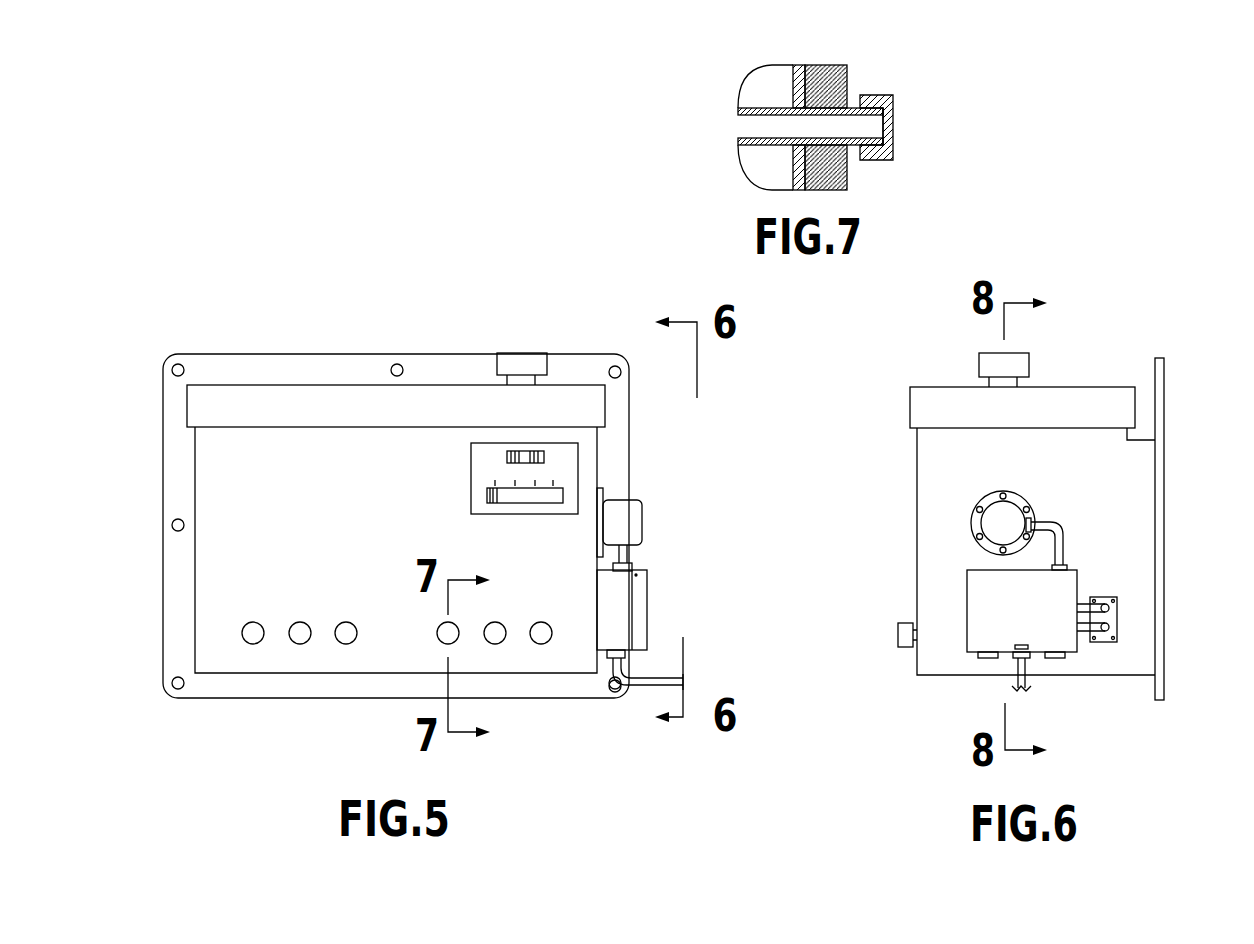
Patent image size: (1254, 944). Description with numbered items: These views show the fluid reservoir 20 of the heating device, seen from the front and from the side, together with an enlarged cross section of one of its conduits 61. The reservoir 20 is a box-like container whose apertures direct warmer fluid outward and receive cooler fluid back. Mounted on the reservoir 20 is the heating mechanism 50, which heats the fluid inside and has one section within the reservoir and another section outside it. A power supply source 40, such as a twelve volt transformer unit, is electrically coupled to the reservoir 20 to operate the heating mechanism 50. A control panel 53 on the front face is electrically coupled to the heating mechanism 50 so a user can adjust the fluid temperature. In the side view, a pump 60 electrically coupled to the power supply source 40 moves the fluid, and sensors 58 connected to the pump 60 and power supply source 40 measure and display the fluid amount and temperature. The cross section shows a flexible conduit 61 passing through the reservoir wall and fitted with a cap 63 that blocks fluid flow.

In FIG. 5, the reservoir 20 is at (240, 497).
In FIG. 6, the reservoir 20 is at (1120, 473).
In FIG. 5, the power supply source 40 is at (620, 598).
In FIG. 6, the power supply source 40 is at (967, 590).
In FIG. 5, the heating mechanism 50 is at (676, 540).
In FIG. 5, the control panel 53 is at (572, 471).
In FIG. 6, the sensors 58 is at (1117, 617).
In FIG. 6, the pump 60 is at (1003, 523).
In FIG. 7, the conduits 61 is at (858, 125).
In FIG. 7, the cap 63 is at (893, 121).